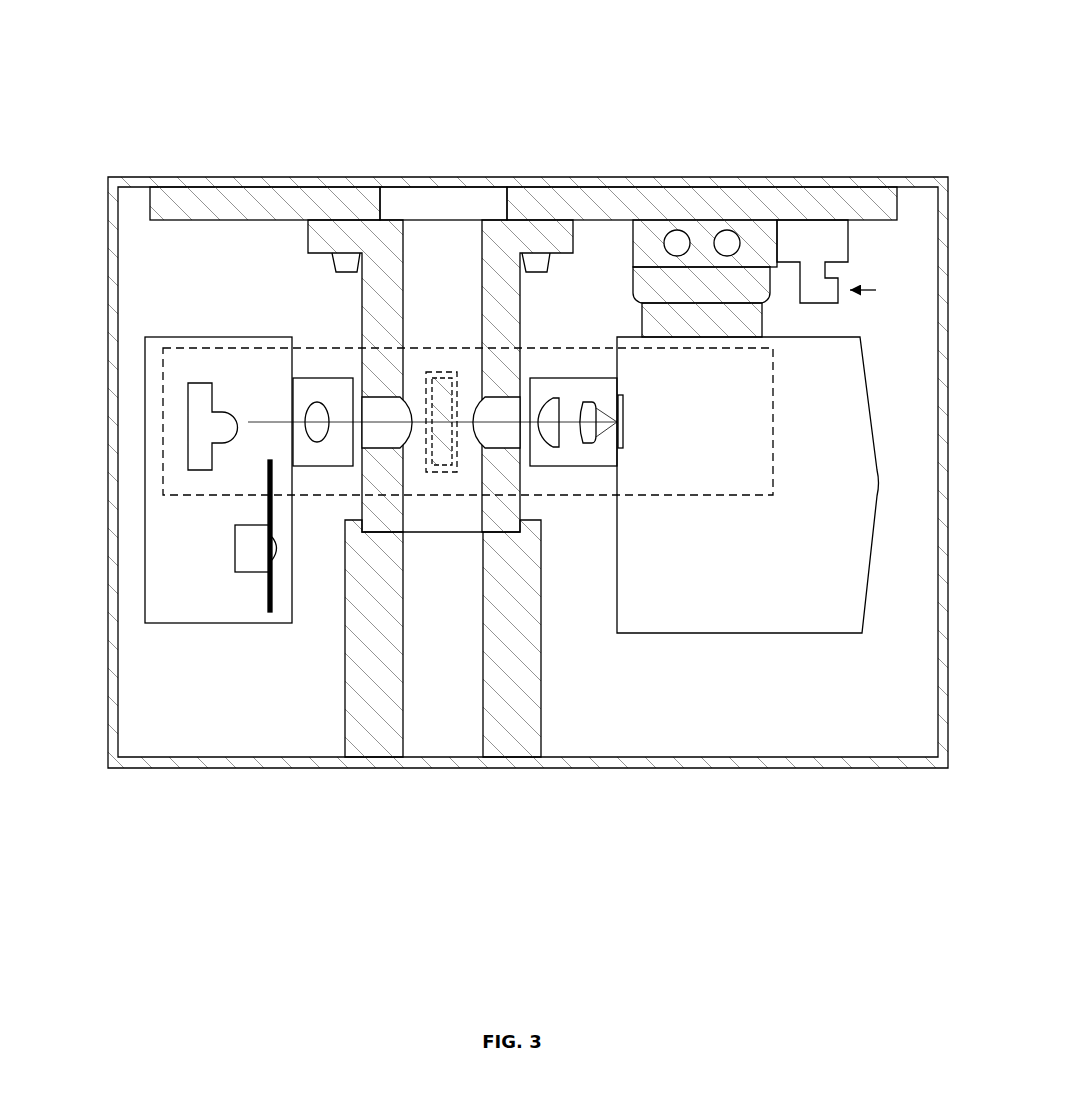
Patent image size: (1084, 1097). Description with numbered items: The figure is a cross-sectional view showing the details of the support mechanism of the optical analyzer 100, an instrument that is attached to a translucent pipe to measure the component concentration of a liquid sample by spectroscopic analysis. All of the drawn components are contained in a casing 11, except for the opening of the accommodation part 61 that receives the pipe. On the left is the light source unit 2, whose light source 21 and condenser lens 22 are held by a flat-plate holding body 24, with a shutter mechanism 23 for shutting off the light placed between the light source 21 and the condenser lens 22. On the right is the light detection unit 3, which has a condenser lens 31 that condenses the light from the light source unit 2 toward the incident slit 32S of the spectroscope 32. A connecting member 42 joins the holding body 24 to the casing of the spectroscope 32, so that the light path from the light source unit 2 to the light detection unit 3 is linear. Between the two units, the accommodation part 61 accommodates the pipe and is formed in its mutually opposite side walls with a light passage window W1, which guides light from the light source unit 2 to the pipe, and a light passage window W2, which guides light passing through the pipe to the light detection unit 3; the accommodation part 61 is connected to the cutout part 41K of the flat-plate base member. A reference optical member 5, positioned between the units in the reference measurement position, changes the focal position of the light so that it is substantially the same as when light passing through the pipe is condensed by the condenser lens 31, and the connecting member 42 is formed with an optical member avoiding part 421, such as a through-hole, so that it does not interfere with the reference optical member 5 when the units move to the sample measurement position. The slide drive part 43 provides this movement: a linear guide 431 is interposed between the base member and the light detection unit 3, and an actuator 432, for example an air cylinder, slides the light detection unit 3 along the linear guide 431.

The optical analyzer 100 is at (335, 90).
The casing 11 is at (250, 187).
The cutout part 41K is at (505, 203).
The slide drive part 43 is at (772, 197).
The linear guide 431 is at (707, 228).
The actuator 432 is at (820, 233).
The accommodation part 61 is at (362, 284).
The light passage window W1 is at (378, 440).
The light passage window W2 is at (505, 440).
The light source unit 2 is at (201, 518).
The holding body 24 is at (145, 483).
The light source 21 is at (200, 470).
The shutter mechanism 23 is at (235, 548).
The condenser lens 22 is at (318, 402).
The optical member avoiding part 421 is at (447, 434).
The reference optical member 5 is at (448, 472).
The connecting member 42 is at (773, 392).
The light detection unit 3 is at (704, 521).
The condenser lens 31 is at (590, 400).
The incident slit 32S is at (628, 422).
The spectroscope 32 is at (818, 636).